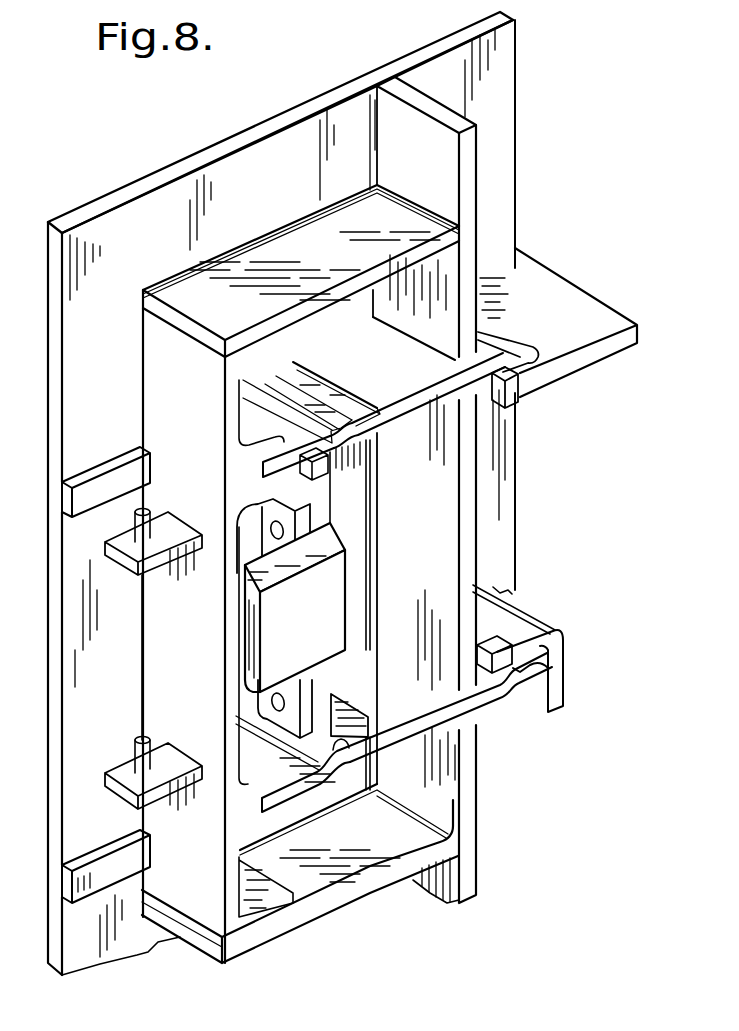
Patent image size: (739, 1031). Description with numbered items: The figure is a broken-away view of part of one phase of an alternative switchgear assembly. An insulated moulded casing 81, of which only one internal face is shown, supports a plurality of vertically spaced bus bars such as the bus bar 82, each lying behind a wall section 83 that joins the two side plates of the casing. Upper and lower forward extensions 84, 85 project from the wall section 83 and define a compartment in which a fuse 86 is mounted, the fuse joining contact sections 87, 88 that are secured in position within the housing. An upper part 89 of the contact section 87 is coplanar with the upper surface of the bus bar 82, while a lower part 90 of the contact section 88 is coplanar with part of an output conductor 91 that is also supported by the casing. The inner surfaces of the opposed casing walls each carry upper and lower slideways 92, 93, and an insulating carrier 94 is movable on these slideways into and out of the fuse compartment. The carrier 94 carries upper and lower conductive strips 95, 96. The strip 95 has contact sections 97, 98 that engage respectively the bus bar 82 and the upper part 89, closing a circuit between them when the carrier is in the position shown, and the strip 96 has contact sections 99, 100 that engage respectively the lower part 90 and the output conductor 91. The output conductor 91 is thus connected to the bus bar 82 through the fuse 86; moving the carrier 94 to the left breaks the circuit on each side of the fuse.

The insulated moulded casing 81 is at (293, 138).
The bus bar 82 is at (568, 290).
The wall section 83 is at (470, 260).
The upper forward extension 84 is at (280, 250).
The lower forward extension 85 is at (355, 893).
The fuse 86 is at (309, 636).
The contact section 87 is at (358, 458).
The contact section 88 is at (345, 714).
The upper part of contact section 89 is at (263, 468).
The lower part of contact section 90 is at (360, 742).
The output conductor 91 is at (555, 663).
The upper slideway 92 is at (120, 476).
The lower slideway 93 is at (120, 863).
The insulating carrier 94 is at (162, 693).
The upper conductive strip 95 is at (448, 388).
The lower conductive strip 96 is at (473, 732).
The contact section 97 is at (518, 385).
The contact section 98 is at (333, 478).
The contact section 99 is at (517, 643).
The contact section 100 is at (348, 750).